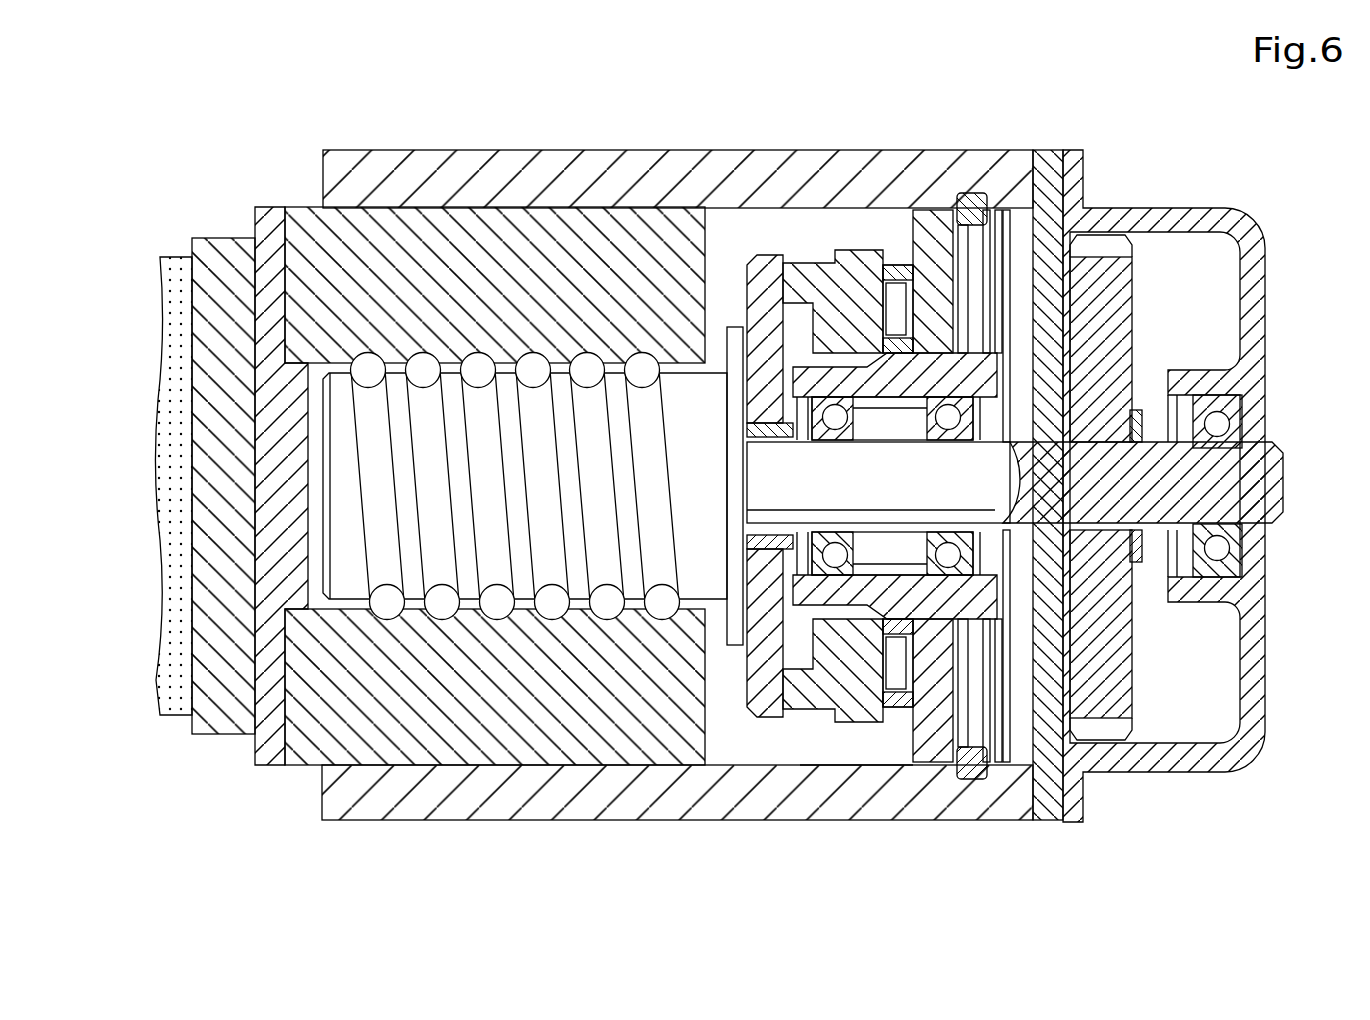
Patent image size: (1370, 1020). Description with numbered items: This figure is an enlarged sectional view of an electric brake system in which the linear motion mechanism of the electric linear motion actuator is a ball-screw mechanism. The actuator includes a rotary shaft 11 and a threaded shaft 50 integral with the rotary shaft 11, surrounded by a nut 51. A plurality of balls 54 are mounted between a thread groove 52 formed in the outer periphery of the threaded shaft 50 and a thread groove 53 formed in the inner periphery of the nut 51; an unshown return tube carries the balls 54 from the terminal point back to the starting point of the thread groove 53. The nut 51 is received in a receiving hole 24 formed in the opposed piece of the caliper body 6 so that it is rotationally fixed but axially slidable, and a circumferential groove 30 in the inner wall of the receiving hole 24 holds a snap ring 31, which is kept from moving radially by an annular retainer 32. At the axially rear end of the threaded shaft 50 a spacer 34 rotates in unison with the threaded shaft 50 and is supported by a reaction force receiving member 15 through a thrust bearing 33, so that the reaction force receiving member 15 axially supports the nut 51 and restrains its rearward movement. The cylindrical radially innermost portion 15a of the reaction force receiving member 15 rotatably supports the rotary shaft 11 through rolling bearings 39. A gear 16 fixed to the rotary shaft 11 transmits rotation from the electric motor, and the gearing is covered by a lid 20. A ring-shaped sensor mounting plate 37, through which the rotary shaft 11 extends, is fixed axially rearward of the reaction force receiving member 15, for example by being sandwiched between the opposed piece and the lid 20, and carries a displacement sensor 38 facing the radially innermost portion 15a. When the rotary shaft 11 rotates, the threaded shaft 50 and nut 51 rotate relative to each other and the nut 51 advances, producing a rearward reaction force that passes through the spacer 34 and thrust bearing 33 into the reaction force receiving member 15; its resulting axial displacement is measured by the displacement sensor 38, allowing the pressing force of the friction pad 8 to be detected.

The caliper body 6 is at (322, 806).
The friction pad 8 is at (176, 266).
The rotary shaft 11 is at (1272, 446).
The reaction force receiving member 15 is at (931, 222).
The radially innermost portion 15a is at (891, 432).
The gear 16 is at (1101, 262).
The lid 20 is at (1206, 212).
The receiving hole 24 is at (855, 762).
The circumferential groove 30 is at (986, 765).
The snap ring 31 is at (968, 783).
The annular retainer 32 is at (1000, 765).
The thrust bearing 33 is at (891, 263).
The spacer 34 is at (846, 252).
The sensor mounting plate 37 is at (1048, 165).
The displacement sensor 38 is at (1007, 400).
The rolling bearings 39 is at (941, 428).
The threaded shaft 50 is at (694, 394).
The nut 51 is at (672, 214).
The thread groove 52 is at (643, 370).
The thread groove 53 is at (534, 370).
The balls 54 is at (424, 370).